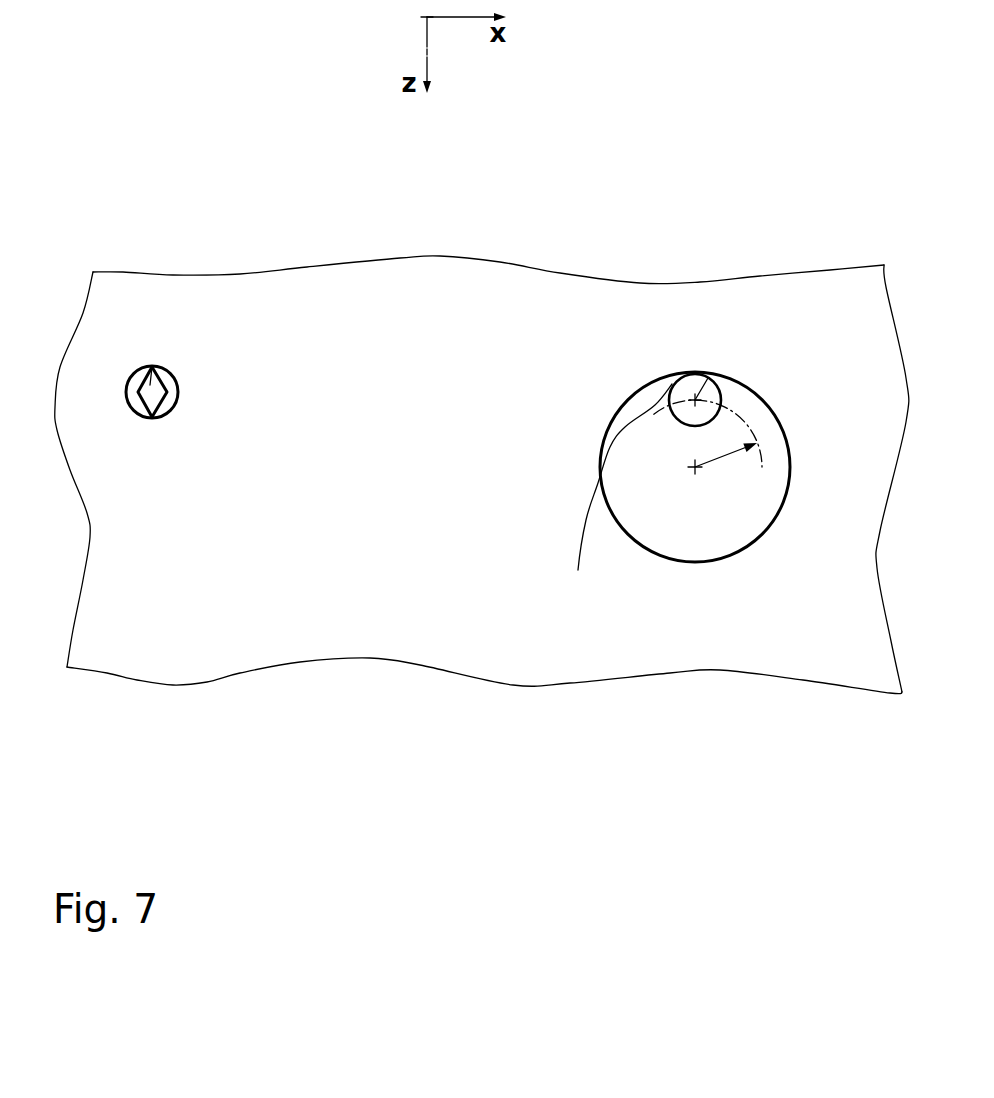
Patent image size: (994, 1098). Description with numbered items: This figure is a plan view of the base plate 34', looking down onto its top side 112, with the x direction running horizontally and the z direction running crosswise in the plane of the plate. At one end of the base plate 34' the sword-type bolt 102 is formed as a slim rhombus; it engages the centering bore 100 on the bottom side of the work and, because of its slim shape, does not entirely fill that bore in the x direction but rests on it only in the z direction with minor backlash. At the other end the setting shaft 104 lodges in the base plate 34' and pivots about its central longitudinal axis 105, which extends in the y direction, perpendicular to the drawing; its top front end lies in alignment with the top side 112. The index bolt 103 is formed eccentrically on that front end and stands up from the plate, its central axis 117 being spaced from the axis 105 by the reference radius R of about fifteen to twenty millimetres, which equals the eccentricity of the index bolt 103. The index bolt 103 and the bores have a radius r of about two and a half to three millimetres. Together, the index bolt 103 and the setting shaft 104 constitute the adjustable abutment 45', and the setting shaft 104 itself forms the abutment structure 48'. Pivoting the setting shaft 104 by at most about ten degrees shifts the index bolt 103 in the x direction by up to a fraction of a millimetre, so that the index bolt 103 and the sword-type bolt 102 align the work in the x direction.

The centering bore 100 is at (126, 392).
The sword-type bolt 102 is at (155, 367).
The top side of the base plate 112 is at (325, 287).
The base plate 34' is at (484, 746).
The setting shaft 104 is at (640, 403).
The index bolt 103 is at (672, 382).
The radius of the bores r is at (695, 397).
The abutment structure 48' is at (751, 268).
The central axis of the index bolt 117 is at (578, 570).
The central longitudinal axis 105 is at (692, 470).
The reference radius R is at (731, 454).
The adjustable abutment 45' is at (731, 603).